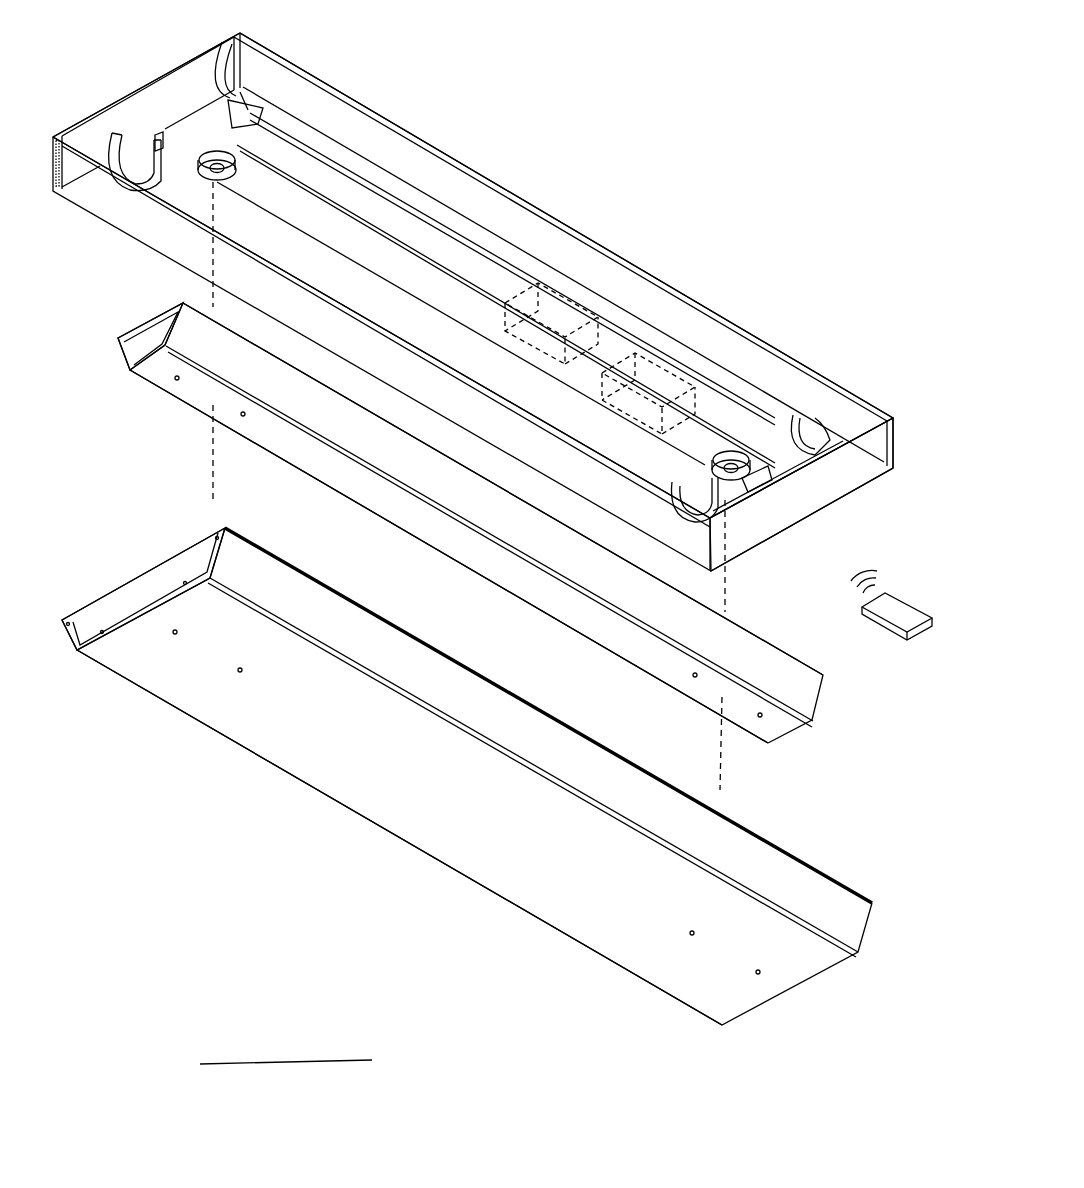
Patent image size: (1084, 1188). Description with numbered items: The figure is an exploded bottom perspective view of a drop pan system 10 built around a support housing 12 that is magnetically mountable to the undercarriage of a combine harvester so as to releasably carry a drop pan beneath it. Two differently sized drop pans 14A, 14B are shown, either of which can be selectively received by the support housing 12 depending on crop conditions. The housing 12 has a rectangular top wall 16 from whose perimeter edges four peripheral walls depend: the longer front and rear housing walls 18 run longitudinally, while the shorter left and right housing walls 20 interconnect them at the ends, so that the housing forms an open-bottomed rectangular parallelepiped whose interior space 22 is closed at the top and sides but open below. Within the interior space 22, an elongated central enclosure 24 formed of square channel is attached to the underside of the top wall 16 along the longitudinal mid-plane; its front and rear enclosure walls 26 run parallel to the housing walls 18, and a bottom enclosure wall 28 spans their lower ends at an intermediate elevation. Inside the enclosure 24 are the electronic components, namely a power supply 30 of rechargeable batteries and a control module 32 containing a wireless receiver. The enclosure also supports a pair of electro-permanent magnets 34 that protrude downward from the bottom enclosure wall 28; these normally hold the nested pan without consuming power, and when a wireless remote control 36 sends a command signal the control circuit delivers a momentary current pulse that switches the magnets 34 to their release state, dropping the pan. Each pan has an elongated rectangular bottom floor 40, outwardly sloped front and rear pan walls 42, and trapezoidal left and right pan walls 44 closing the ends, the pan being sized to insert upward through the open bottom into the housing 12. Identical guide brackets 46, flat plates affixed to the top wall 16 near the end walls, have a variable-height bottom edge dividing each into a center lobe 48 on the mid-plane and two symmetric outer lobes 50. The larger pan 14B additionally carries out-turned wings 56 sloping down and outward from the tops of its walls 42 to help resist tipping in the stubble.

The drop pan system 10 is at (800, 182).
The support housing 12 is at (768, 378).
The drop pan 14A is at (824, 700).
The drop pan 14B is at (819, 867).
The top wall 16 is at (185, 206).
The front and rear housing walls 18 is at (556, 232).
The left and right housing walls 20 is at (147, 102).
The interior space 22 is at (826, 476).
The central enclosure 24 is at (374, 256).
The front and rear enclosure walls 26 is at (408, 236).
The bottom enclosure wall 28 is at (456, 304).
The power supply 30 is at (656, 426).
The control module 32 is at (534, 376).
The electro-permanent magnets 34 is at (242, 162).
The wireless remote control 36 is at (918, 628).
The bottom floor 40 is at (498, 570).
The front and rear pan walls 42 is at (757, 636).
The left and right pan walls 44 is at (142, 339).
The guide brackets 46 is at (140, 165).
The center lobe 48 is at (185, 133).
The outer lobes 50 is at (192, 54).
The out-turned wings 56 is at (566, 730).